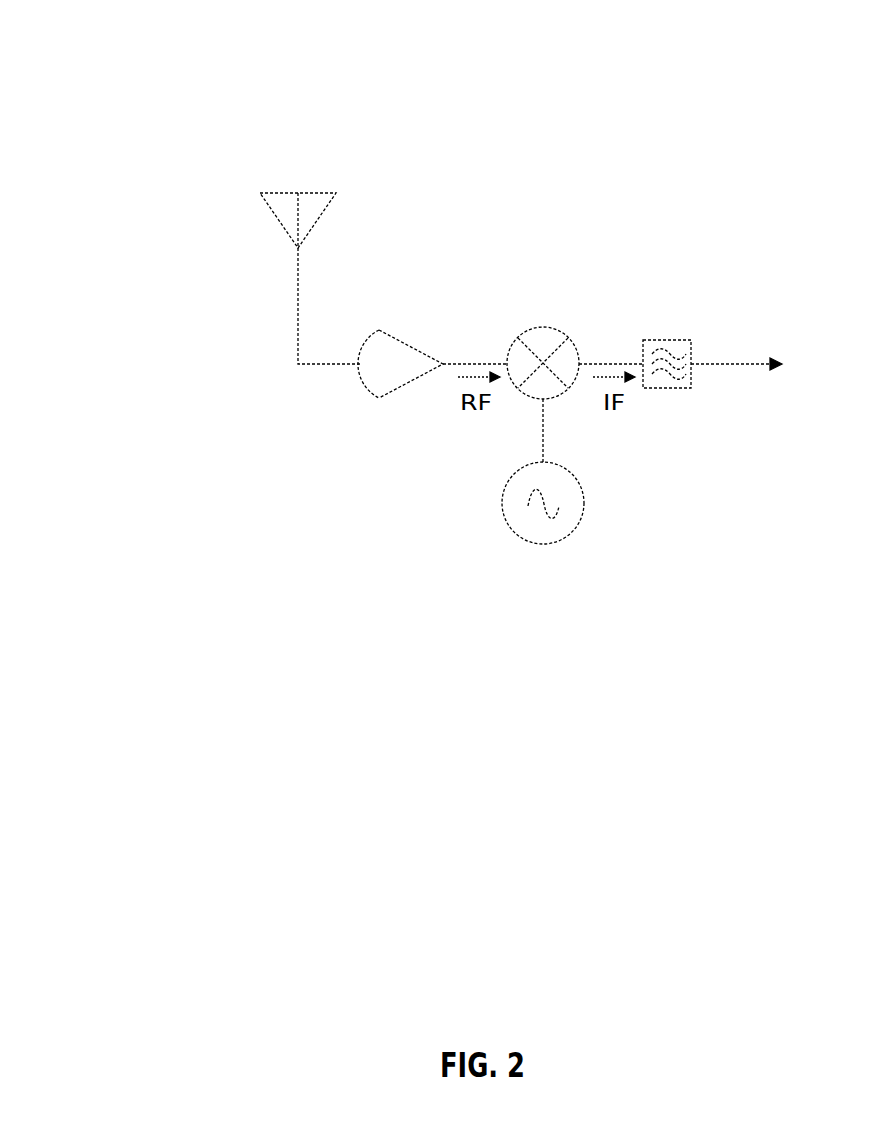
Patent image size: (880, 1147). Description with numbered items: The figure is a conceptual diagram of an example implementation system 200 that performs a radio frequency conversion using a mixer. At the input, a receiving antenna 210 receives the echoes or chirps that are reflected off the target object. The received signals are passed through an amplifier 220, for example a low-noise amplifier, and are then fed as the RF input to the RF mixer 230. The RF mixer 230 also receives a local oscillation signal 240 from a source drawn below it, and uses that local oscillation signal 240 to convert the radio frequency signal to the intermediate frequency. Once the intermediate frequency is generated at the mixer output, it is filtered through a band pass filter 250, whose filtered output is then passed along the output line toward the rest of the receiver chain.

The implementation system 200 is at (138, 82).
The receiving antenna 210 is at (278, 193).
The amplifier 220 is at (379, 330).
The RF mixer 230 is at (540, 327).
The local oscillation signal 240 is at (513, 480).
The band pass filter 250 is at (664, 340).